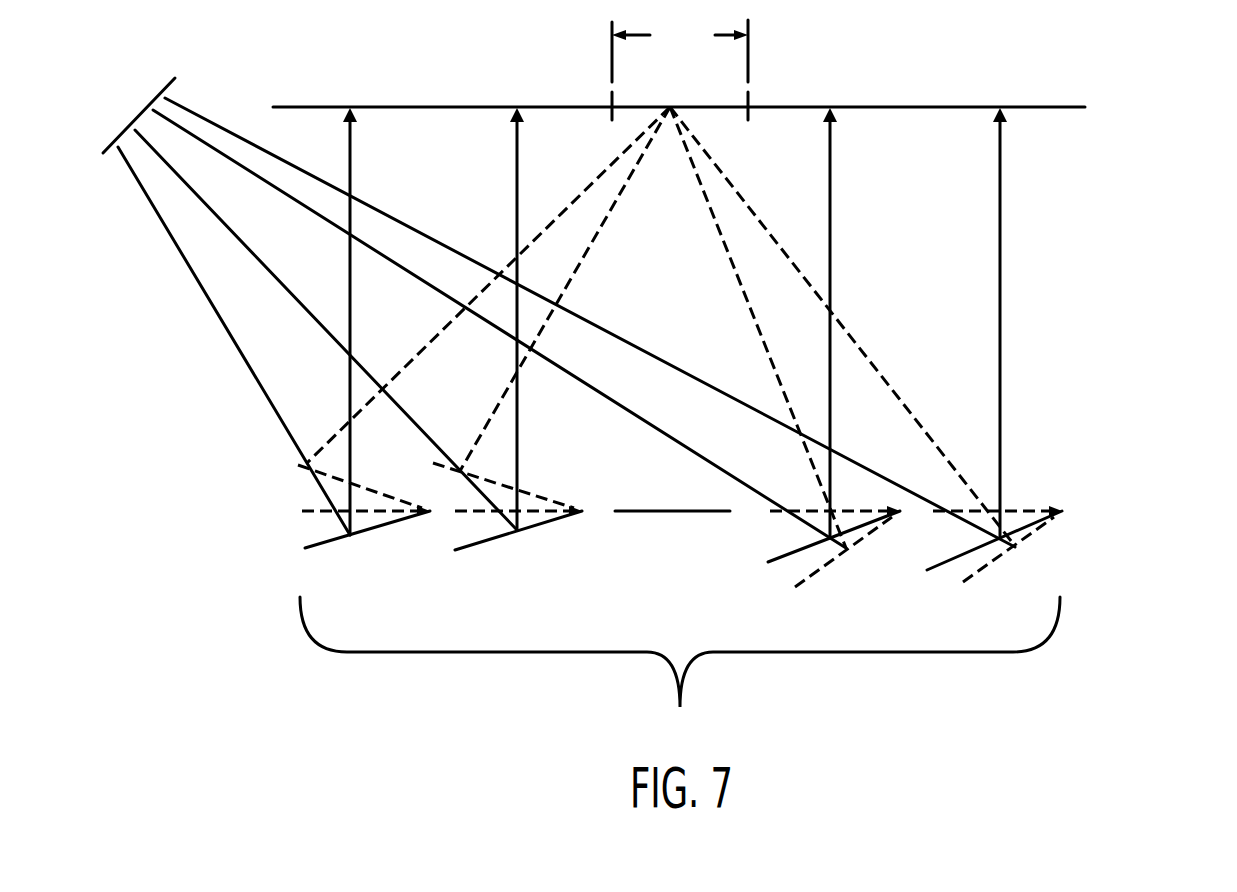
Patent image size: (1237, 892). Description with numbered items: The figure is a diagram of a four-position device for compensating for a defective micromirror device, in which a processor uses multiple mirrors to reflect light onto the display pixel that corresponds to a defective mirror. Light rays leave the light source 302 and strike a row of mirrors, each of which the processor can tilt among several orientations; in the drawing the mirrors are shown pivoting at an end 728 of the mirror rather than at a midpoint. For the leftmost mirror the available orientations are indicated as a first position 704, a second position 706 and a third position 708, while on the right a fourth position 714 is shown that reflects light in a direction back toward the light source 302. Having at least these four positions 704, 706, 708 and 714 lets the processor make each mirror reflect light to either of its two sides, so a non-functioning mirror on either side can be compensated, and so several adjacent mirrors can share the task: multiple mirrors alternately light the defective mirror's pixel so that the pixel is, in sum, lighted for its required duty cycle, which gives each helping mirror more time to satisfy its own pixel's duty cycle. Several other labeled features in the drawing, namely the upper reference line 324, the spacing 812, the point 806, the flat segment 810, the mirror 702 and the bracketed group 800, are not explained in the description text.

The light source 302 is at (140, 113).
The target plane 324 is at (1070, 106).
The spot spacing 812 is at (680, 67).
The focal point 806 is at (670, 104).
The third position 708 is at (300, 466).
The second position 706 is at (302, 512).
The first position 704 is at (305, 549).
The end of the mirror 728 is at (583, 513).
The flat mirror 810 is at (670, 512).
The fourth position 714 is at (975, 573).
The mirror 702 is at (965, 584).
The mirror array 800 is at (680, 671).